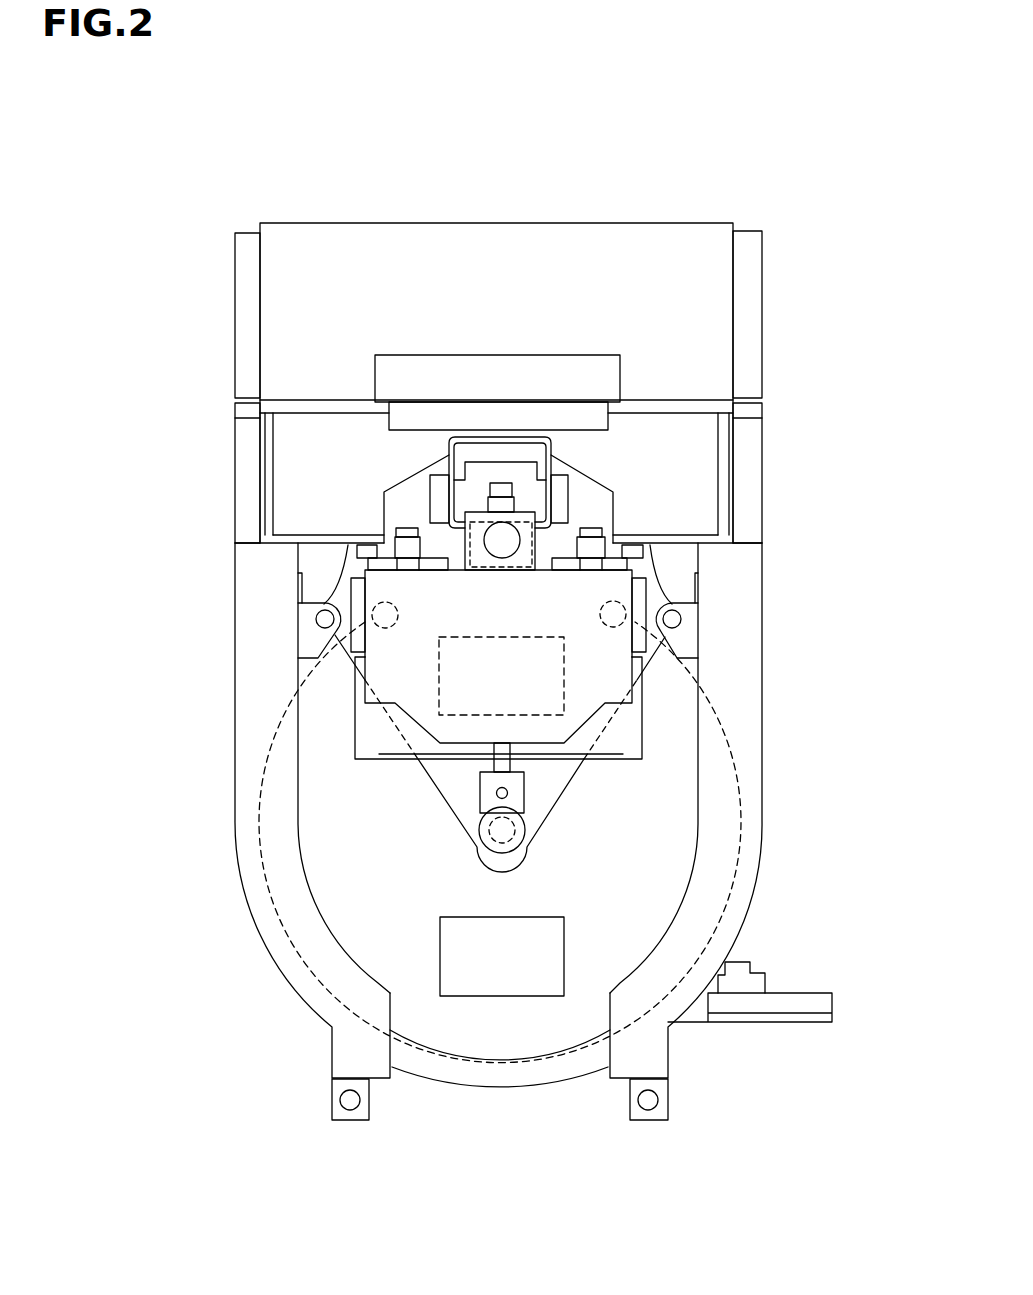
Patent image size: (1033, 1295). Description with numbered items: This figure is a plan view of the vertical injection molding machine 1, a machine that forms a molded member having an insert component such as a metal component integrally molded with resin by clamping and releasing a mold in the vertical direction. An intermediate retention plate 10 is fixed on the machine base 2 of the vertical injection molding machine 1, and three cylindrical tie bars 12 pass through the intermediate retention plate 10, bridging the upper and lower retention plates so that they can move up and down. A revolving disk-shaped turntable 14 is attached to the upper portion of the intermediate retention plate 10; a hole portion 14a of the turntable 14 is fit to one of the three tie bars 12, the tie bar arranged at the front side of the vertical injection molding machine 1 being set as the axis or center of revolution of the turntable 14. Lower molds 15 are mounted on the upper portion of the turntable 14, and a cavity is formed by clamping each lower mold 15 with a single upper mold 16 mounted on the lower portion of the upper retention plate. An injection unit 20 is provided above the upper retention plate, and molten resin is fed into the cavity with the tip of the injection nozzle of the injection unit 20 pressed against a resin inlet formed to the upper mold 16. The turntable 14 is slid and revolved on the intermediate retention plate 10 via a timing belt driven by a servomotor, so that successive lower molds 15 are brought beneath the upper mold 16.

The vertical injection molding machine 1 is at (777, 366).
The machine base 2 is at (753, 458).
The intermediate retention plate 10 is at (583, 1060).
The tie bars 12 is at (377, 593).
The turntable 14 is at (445, 1035).
The hole portion 14a is at (477, 853).
The lower molds 15 is at (503, 978).
The upper mold 16 is at (564, 664).
The injection unit 20 is at (408, 672).